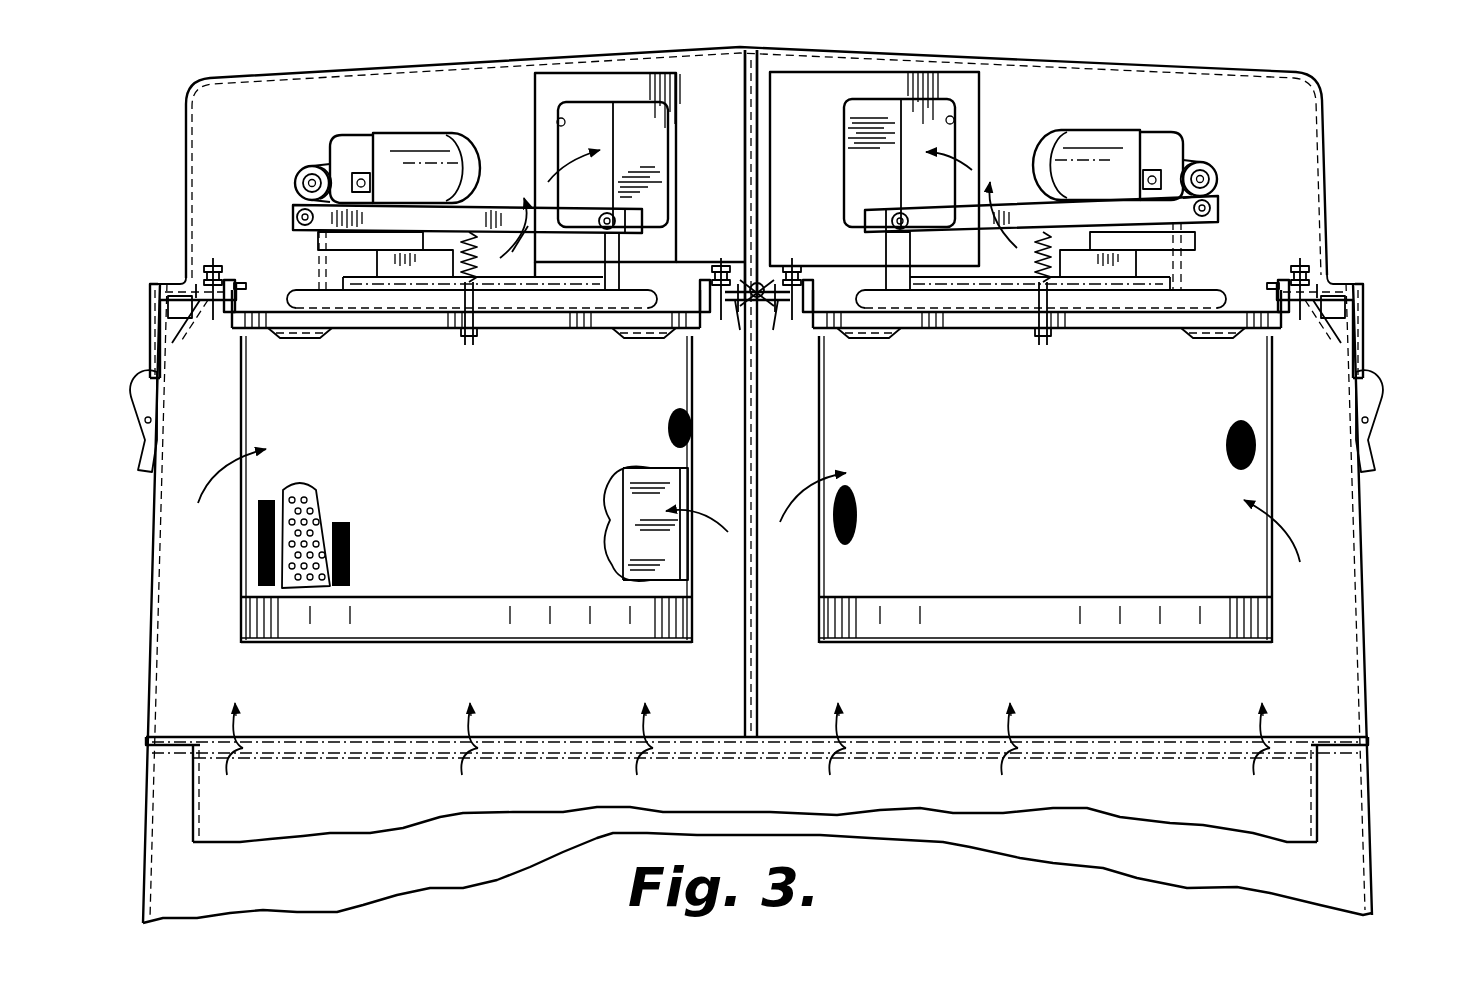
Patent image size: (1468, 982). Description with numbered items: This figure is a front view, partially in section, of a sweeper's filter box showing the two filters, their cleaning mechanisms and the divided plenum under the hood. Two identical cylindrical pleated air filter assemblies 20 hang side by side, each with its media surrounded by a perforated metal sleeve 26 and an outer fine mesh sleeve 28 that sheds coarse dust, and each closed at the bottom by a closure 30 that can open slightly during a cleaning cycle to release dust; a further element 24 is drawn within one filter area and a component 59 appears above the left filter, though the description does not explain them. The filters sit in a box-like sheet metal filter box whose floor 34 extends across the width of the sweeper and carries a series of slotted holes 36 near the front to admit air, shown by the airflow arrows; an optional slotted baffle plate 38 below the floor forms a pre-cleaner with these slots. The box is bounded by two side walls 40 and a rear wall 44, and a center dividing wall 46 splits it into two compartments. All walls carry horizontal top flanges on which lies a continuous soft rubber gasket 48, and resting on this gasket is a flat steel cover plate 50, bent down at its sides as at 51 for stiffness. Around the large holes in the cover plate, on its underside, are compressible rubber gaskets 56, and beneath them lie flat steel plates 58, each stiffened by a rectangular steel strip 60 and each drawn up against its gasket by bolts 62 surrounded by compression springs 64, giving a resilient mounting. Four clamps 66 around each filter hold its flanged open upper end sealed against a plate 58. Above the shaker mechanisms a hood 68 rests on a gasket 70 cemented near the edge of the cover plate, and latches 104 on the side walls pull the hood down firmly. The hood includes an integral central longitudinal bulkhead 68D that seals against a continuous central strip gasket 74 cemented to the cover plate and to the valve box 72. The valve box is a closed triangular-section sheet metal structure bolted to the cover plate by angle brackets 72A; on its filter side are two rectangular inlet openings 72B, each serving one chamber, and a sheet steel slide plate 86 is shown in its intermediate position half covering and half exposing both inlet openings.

The air filter assembly 20 is at (242, 590).
The heating element box 24 is at (648, 472).
The perforated metal sleeve 26 is at (322, 500).
The fine mesh sleeve 28 is at (690, 436).
The closure 30 is at (590, 645).
The floor 34 is at (986, 725).
The slotted holes 36 is at (1185, 738).
The slotted baffle plate 38 is at (985, 762).
The side walls 40 is at (152, 595).
The rear wall 44 is at (1345, 690).
The center dividing wall 46 is at (758, 692).
The soft rubber gasket 48 is at (166, 297).
The cover plate 50 is at (192, 280).
The bent-down side 51 is at (150, 340).
The compressible rubber gaskets 56 is at (190, 326).
The flat steel plates 58 is at (580, 328).
The motor 59 is at (426, 136).
The steel strip 60 is at (236, 284).
The bolts 62 is at (222, 262).
The compression spring 64 is at (240, 282).
The clamps 66 is at (300, 338).
The hood 68 is at (1330, 142).
The central longitudinal bulkhead 68D is at (744, 130).
The gasket 70 is at (180, 282).
The valve box 72 is at (986, 105).
The angle brackets 72A is at (1005, 345).
The inlet openings 72B is at (558, 120).
The central strip gasket 74 is at (764, 284).
The slide plate 86 is at (652, 178).
The latches 104 is at (146, 455).